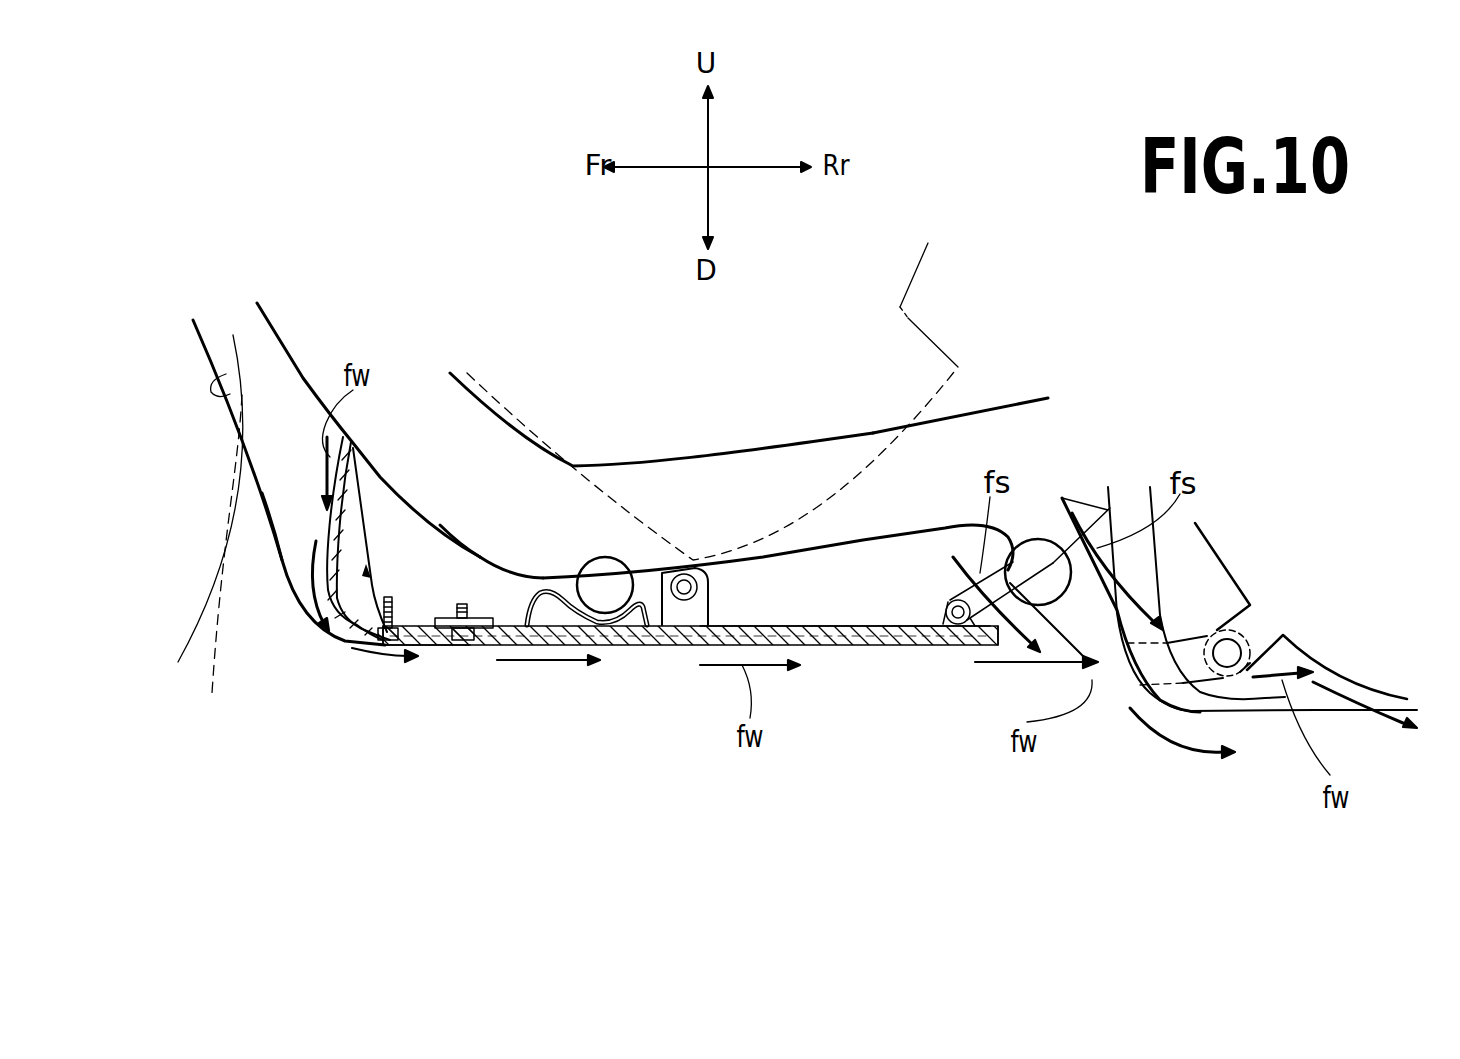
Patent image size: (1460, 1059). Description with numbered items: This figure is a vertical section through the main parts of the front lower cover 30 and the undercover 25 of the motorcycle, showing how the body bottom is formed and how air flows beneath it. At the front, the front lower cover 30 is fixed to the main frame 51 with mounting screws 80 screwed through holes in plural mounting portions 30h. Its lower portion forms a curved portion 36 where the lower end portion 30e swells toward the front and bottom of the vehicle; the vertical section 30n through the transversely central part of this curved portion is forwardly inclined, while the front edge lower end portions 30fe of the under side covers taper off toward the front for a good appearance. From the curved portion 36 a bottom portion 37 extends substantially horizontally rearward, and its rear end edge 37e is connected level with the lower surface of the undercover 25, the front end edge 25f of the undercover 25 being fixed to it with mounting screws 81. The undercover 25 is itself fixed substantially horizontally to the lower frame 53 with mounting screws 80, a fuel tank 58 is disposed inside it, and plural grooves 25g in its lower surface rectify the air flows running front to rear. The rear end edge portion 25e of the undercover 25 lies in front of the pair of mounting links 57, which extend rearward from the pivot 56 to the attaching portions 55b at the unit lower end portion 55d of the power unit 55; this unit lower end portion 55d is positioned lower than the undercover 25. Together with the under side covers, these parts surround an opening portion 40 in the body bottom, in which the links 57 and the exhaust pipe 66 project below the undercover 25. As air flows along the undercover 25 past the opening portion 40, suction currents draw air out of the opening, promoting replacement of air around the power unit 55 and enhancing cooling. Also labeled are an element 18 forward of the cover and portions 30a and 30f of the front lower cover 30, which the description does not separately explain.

The front wheel 18 is at (205, 617).
The undercover 25 is at (759, 610).
The rear end edge portion of the undercover 25e is at (1000, 665).
The front end edge of the undercover 25f is at (477, 650).
The grooves 25g is at (876, 626).
The front lower cover 30 is at (370, 607).
The fender upper wall 30a is at (297, 415).
The lower end portion 30e is at (424, 667).
The fender front wall 30f is at (240, 390).
The front edge lower end portions 30fe is at (297, 607).
The mounting portions 30h is at (390, 653).
The vertical section 30n is at (387, 610).
The curved portion 36 is at (320, 632).
The bottom portion 37 is at (430, 610).
The rear end edge of the bottom portion 37e is at (498, 623).
The opening portion 40 is at (1050, 665).
The main frame 51 is at (460, 457).
The lower frame 53 is at (943, 437).
The power unit 55 is at (1264, 477).
The attaching portions 55b is at (1222, 625).
The unit lower end portion 55d is at (1287, 653).
The pivot 56 is at (1090, 522).
The mounting links 57 is at (1093, 680).
The fuel tank 58 is at (907, 317).
The exhaust pipe 66 is at (1173, 715).
The mounting screws 80 is at (686, 575).
The mounting screws 81 is at (470, 612).